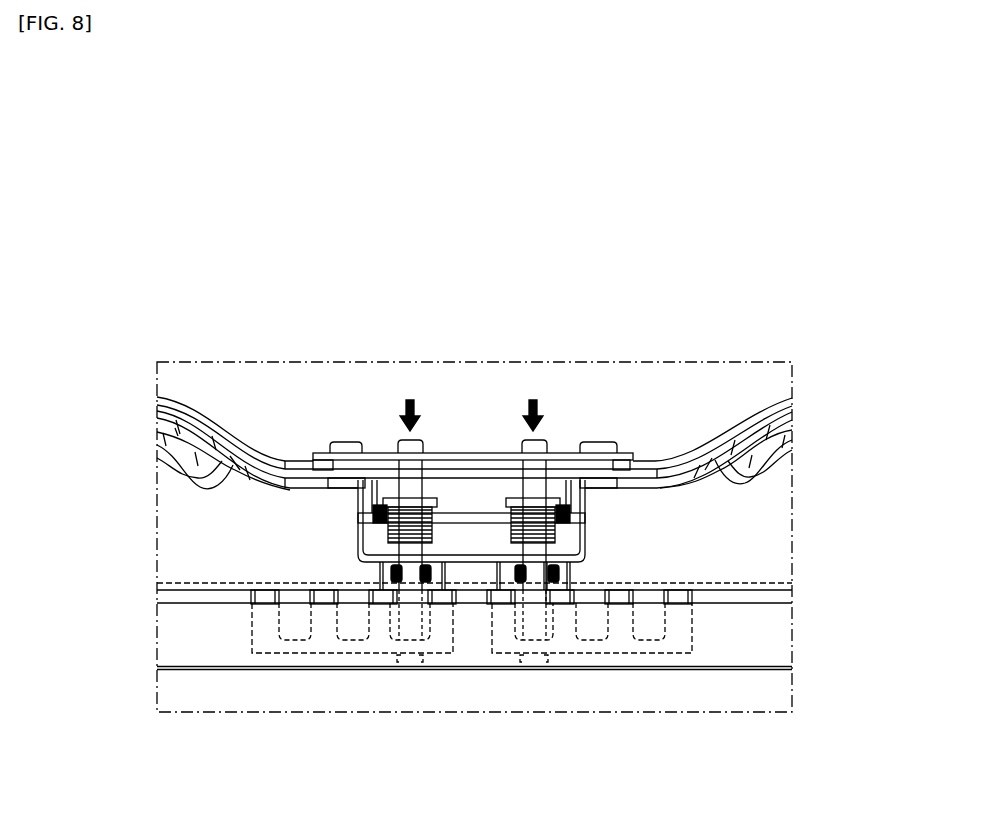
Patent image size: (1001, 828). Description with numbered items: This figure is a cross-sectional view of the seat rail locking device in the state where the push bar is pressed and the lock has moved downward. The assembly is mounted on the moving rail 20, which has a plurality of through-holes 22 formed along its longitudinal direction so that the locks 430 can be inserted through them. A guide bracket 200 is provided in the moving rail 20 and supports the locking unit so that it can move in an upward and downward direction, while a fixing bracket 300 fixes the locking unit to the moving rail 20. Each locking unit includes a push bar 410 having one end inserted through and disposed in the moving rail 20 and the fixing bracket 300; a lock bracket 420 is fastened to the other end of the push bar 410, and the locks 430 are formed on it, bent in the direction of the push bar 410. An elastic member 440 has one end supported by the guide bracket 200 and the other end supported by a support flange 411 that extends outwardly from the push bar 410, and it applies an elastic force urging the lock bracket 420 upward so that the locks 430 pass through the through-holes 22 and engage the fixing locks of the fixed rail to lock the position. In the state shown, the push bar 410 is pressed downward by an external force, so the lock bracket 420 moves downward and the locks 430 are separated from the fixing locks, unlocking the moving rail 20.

The moving rail 20 is at (689, 504).
The through-holes 22 is at (247, 593).
The guide bracket 200 is at (475, 540).
The fixing bracket 300 is at (471, 453).
The push bar 410 is at (414, 436).
The support flange 411 is at (360, 498).
The lock bracket 420 is at (353, 648).
The locks 430 is at (268, 603).
The elastic member 440 is at (357, 512).